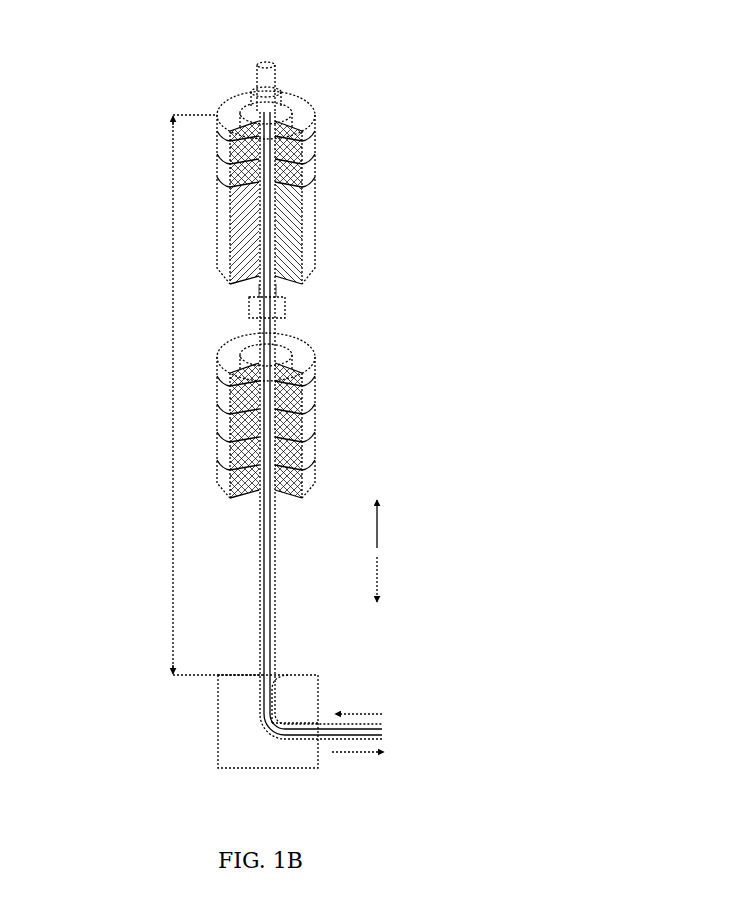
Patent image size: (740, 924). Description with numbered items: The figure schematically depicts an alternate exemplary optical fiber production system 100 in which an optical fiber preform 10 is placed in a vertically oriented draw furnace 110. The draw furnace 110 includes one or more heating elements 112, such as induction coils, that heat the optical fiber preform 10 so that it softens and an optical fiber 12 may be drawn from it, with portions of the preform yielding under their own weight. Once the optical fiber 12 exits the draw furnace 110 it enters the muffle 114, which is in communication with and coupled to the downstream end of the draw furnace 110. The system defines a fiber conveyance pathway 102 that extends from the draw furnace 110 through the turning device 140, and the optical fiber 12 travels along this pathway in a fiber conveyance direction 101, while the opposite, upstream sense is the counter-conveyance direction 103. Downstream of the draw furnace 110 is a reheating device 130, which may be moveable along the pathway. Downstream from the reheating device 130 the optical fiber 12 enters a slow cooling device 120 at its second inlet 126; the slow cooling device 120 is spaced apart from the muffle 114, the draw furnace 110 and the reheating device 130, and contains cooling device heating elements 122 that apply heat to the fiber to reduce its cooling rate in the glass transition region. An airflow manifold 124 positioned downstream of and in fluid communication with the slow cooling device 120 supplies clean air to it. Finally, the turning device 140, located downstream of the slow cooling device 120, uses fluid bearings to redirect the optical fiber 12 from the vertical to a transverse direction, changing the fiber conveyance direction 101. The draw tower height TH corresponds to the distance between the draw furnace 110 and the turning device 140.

The optical fiber production system 100 is at (121, 92).
The optical fiber preform 10 is at (234, 71).
The draw furnace 110 is at (211, 116).
The heating elements 112 is at (319, 144).
The muffle 114 is at (341, 212).
The optical fiber 12 is at (253, 290).
The fiber conveyance pathway 102 is at (277, 288).
The reheating device 130 is at (287, 308).
The second inlet 126 is at (287, 349).
The slow cooling device 120 is at (363, 388).
The cooling device heating elements 122 is at (316, 396).
The airflow manifold 124 is at (326, 475).
The counter-conveyance direction 103 is at (378, 523).
The fiber conveyance direction 101 is at (378, 581).
The turning device 140 is at (220, 776).